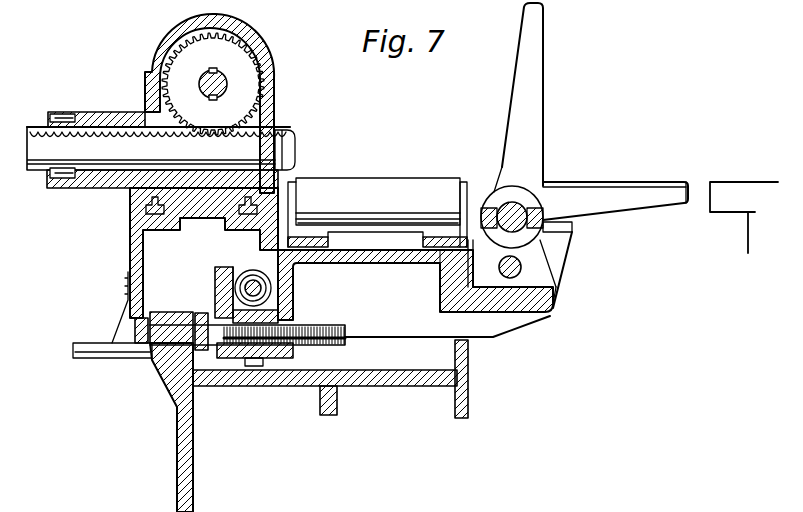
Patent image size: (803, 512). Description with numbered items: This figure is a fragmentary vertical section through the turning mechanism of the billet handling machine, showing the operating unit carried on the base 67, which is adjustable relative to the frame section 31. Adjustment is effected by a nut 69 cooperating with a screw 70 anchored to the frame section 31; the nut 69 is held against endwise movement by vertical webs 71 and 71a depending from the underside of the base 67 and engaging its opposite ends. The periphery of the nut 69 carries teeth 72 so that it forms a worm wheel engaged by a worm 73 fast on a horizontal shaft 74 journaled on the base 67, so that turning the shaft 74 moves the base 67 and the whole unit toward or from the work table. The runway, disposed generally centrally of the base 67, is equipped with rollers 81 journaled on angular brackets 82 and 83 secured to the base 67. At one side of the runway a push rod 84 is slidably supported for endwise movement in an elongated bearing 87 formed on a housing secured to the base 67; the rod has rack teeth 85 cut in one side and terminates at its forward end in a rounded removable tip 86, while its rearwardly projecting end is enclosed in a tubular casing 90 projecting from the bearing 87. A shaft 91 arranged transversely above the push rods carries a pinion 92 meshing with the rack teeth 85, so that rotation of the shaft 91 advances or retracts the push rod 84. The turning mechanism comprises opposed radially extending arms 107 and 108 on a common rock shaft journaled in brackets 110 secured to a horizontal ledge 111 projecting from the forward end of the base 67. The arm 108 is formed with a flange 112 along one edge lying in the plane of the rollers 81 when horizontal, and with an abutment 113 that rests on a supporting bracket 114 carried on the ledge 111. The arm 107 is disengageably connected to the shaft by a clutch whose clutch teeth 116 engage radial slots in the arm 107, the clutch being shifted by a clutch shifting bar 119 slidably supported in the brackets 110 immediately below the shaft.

The frame section 31 is at (182, 447).
The base 67 is at (500, 320).
The nut 69 is at (270, 356).
The screw 70 is at (315, 330).
The vertical web 71 is at (218, 276).
The vertical web 71a is at (290, 289).
The teeth 72 is at (257, 366).
The worm 73 is at (253, 278).
The horizontal shaft 74 is at (244, 286).
The rollers 81 is at (390, 185).
The angular bracket 82 is at (322, 238).
The angular bracket 83 is at (422, 233).
The push rod 84 is at (114, 140).
The rack teeth 85 is at (45, 125).
The removable tip 86 is at (288, 146).
The elongated bearing 87 is at (100, 178).
The tubular casing 90 is at (44, 176).
The shaft 91 is at (221, 90).
The pinion 92 is at (256, 62).
The arm 107 is at (548, 76).
The arm 108 is at (615, 187).
The bracket 110 is at (535, 250).
The ledge 111 is at (550, 308).
The flange 112 is at (662, 182).
The abutment 113 is at (572, 233).
The supporting bracket 114 is at (560, 245).
The clutch teeth 116 is at (541, 216).
The clutch shifting bar 119 is at (520, 276).